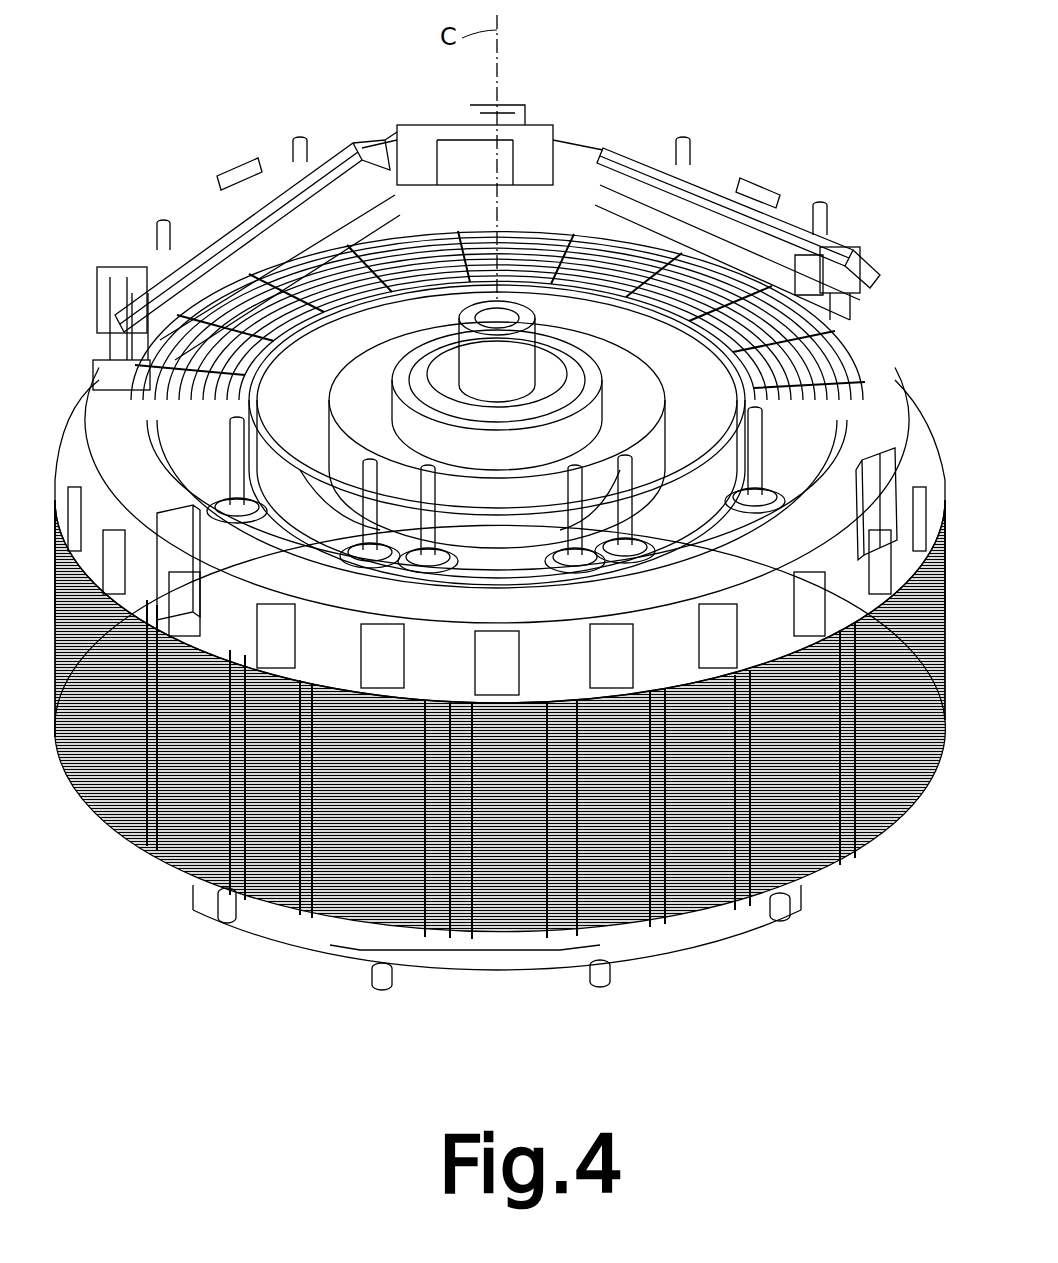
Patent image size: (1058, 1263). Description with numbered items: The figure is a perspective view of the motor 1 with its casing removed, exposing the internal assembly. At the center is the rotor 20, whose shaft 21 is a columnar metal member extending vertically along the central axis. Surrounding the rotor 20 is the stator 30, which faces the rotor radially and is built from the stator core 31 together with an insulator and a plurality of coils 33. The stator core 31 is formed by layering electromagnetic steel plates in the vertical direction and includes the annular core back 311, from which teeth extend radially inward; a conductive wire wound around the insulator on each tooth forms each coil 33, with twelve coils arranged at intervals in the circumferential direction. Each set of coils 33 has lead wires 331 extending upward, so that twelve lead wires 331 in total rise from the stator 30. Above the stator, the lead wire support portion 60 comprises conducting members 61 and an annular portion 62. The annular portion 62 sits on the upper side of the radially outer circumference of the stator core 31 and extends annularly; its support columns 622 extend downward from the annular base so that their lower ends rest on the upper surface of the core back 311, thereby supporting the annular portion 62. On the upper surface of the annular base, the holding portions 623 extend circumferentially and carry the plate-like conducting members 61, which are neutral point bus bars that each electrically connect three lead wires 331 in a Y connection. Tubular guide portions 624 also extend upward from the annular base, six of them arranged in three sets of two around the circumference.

The motor 1 is at (176, 61).
The rotor 20 is at (323, 380).
The shaft 21 is at (522, 362).
The stator 30 is at (140, 923).
The stator core 31 is at (132, 866).
The core back 311 is at (245, 920).
The coil 33 is at (412, 245).
The lead wire 331 is at (299, 138).
The lead wire support portion 60 is at (795, 104).
The conducting member 61 is at (266, 155).
The annular portion 62 is at (906, 290).
The support column 622 is at (888, 522).
The holding portion 623 is at (198, 174).
The guide portion 624 is at (365, 548).